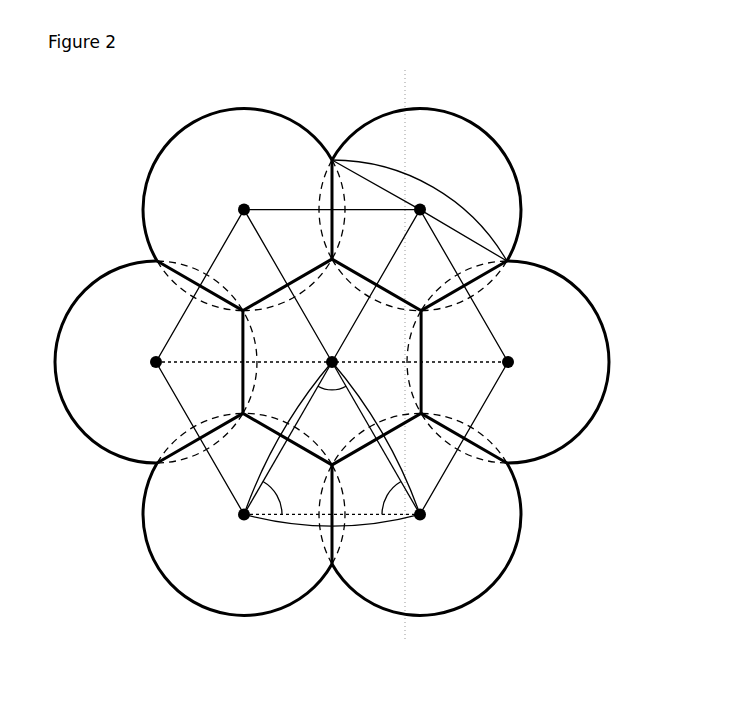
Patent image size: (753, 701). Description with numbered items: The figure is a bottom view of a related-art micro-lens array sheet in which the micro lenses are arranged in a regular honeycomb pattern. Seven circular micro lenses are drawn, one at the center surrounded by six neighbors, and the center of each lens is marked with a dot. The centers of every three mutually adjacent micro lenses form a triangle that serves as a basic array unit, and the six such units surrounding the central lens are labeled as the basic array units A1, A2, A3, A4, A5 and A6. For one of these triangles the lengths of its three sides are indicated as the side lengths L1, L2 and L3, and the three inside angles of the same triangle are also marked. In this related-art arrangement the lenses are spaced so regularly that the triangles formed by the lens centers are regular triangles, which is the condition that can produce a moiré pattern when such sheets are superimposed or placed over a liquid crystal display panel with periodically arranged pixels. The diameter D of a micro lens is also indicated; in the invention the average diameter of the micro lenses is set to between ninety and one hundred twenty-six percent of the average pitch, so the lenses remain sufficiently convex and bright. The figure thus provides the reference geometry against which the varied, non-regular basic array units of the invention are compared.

The basic array unit A1 is at (291, 525).
The basic array unit A2 is at (458, 393).
The basic array unit A3 is at (468, 320).
The basic array unit A4 is at (362, 220).
The basic array unit A5 is at (240, 268).
The basic array unit A6 is at (177, 380).
The diameter D is at (419, 210).
The length of a side of the basic array unit L1 is at (332, 535).
The length of a side of the basic array unit L2 is at (379, 438).
The length of a side of the basic array unit L3 is at (282, 438).